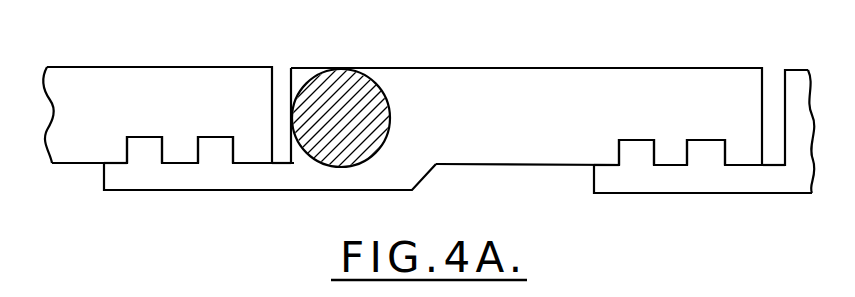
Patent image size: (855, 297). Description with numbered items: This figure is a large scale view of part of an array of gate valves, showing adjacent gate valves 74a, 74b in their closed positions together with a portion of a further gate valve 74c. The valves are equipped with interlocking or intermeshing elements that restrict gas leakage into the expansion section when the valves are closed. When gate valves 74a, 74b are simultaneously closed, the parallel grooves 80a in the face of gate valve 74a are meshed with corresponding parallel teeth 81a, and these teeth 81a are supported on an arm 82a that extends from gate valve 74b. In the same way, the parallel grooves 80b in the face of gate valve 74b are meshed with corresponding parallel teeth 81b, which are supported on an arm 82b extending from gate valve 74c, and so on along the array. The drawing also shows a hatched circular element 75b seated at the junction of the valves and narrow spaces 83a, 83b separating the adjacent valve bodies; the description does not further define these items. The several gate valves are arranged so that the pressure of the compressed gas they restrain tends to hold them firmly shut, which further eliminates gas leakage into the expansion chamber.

The gate valve 74a is at (211, 67).
The gate valve 74b is at (540, 68).
The gate valve 74c is at (803, 70).
The roller 75b is at (372, 72).
The parallel grooves 80a is at (155, 137).
The parallel grooves 80b is at (643, 140).
The parallel teeth 81a is at (127, 152).
The parallel teeth 81b is at (619, 154).
The arm 82a is at (104, 177).
The arm 82b is at (594, 178).
The first gap 83a is at (283, 72).
The second gap 83b is at (773, 78).